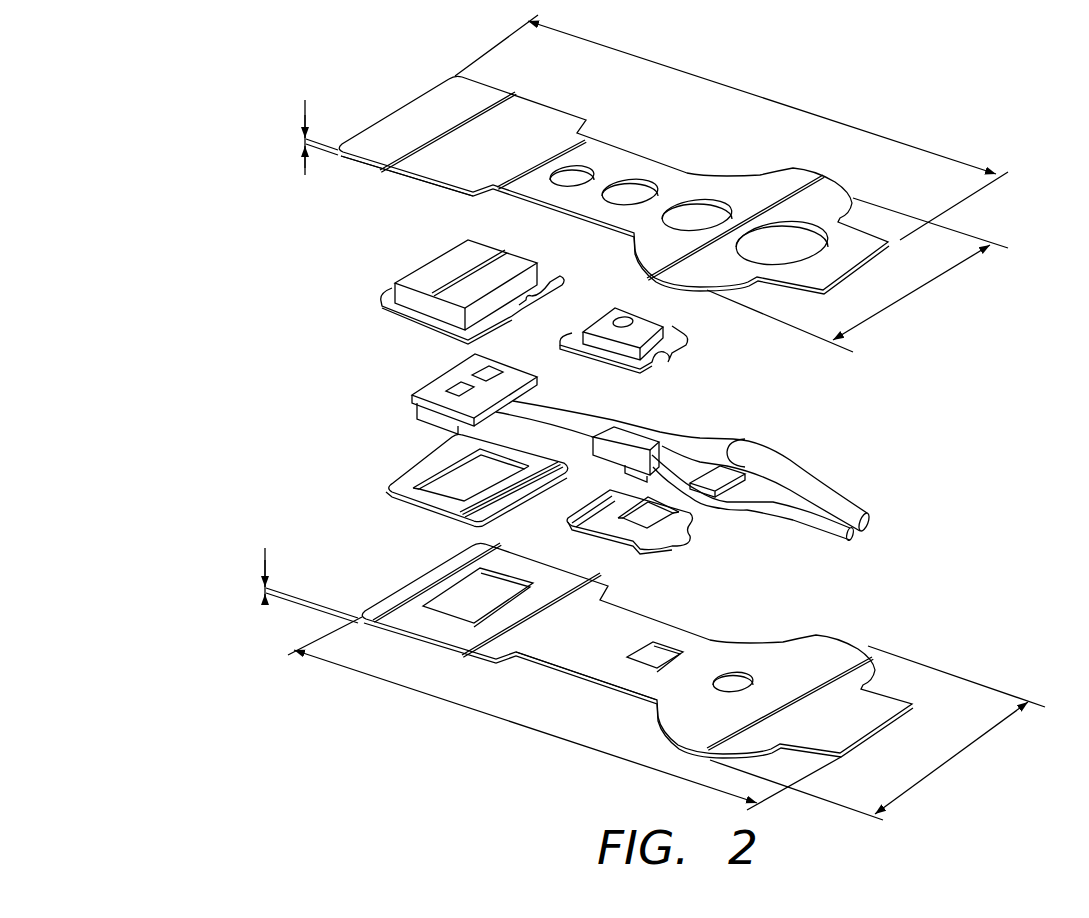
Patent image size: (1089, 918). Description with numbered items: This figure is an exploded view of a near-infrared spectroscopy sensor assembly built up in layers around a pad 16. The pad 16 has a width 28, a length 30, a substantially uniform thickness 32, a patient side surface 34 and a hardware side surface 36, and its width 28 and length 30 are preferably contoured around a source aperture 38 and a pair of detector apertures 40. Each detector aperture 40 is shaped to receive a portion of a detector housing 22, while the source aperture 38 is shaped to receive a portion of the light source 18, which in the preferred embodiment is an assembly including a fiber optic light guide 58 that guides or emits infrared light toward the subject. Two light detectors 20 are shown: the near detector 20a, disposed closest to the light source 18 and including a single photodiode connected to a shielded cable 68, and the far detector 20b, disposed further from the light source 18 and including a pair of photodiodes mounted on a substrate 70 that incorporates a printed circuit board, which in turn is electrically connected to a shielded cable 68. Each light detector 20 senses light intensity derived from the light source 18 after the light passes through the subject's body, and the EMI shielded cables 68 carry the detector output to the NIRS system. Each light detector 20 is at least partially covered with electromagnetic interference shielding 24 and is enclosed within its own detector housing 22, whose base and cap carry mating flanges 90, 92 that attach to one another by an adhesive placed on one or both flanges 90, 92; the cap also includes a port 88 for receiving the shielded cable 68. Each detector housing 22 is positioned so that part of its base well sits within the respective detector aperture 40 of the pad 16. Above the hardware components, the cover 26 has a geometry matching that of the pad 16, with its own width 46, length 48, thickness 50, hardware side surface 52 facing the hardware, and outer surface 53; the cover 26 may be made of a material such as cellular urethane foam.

The pad 16 is at (639, 647).
The light source 18 is at (750, 441).
The light detector 20 is at (519, 412).
The near detector 20a is at (672, 440).
The far detector 20b is at (415, 401).
The detector housing 22 is at (382, 462).
The electromagnetic interference (EMI) shielding 24 is at (640, 430).
The cover 26 is at (427, 82).
The width 28 is at (985, 730).
The length 30 is at (478, 705).
The thickness 32 is at (264, 557).
The patient side surface 34 is at (530, 656).
The hardware side surface 36 is at (395, 598).
The source aperture 38 is at (728, 674).
The detector aperture 40 is at (465, 572).
The width 46 is at (912, 292).
The length 48 is at (830, 117).
The thickness 50 is at (305, 110).
The hardware side surface 52 is at (380, 172).
The outer surface 53 is at (417, 105).
The fiber optic light guide 58 is at (732, 488).
The EMI shielded cable 68 is at (872, 510).
The substrate 70 is at (410, 395).
The port 88 is at (556, 282).
The flange 90 is at (535, 518).
The flange 92 is at (383, 300).